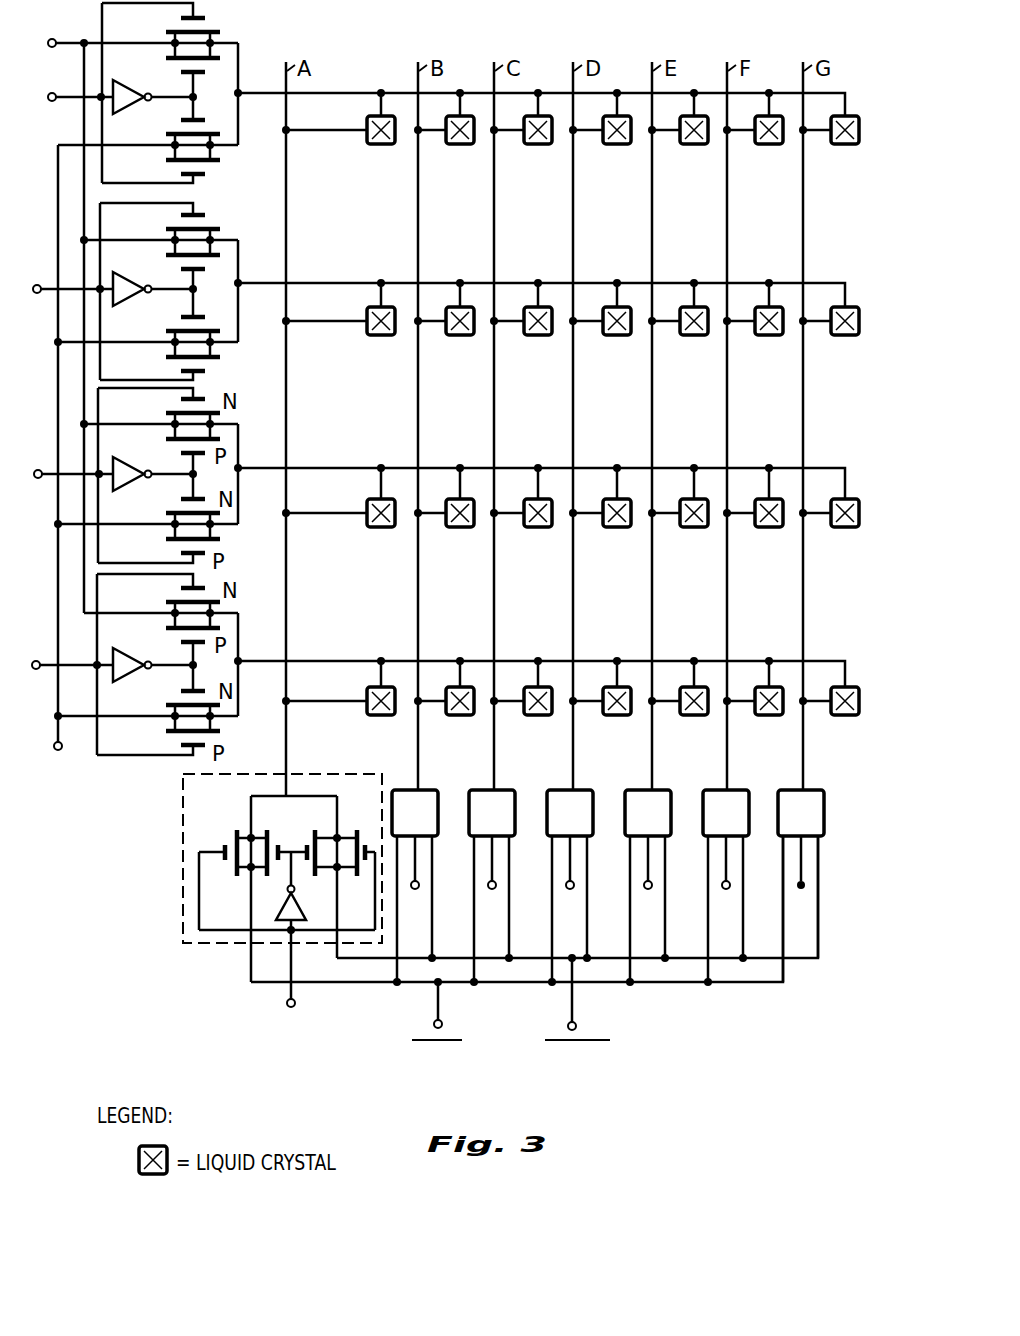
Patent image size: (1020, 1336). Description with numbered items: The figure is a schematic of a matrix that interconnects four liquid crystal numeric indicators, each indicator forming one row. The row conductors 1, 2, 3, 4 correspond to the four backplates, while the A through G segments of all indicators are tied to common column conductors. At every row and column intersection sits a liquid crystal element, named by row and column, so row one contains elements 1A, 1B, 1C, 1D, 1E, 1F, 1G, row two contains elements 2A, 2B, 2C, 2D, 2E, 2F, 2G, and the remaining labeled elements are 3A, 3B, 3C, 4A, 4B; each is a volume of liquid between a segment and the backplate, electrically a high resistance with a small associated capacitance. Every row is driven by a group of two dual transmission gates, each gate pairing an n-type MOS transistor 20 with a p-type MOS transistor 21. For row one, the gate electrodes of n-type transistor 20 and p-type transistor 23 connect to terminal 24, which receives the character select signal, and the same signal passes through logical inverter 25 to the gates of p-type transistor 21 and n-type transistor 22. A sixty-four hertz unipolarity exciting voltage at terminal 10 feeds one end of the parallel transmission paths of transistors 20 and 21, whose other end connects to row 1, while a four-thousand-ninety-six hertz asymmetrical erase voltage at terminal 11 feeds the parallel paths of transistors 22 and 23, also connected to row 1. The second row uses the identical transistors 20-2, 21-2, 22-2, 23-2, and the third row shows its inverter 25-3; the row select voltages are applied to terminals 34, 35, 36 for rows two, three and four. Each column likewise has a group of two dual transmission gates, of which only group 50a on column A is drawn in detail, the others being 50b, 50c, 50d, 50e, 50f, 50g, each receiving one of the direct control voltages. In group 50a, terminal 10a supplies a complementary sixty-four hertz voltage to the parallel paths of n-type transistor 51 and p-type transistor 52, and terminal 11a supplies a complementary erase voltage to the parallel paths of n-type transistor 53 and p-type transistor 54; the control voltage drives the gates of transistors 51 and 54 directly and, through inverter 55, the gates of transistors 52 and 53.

The terminal 10 is at (52, 37).
The terminal 11 is at (61, 742).
The terminal 24 is at (73, 103).
The terminal 34 is at (69, 294).
The terminal 35 is at (36, 477).
The terminal 36 is at (34, 668).
The logical inverter 25 is at (132, 83).
The n-type MOS transistor 20 is at (157, 29).
The p-type MOS transistor 21 is at (153, 76).
The n-type MOS transistor 22 is at (157, 139).
The p-type MOS transistor 23 is at (157, 179).
The n-type MOS transistor 20-2 is at (155, 233).
The p-type MOS transistor 21-2 is at (150, 265).
The n-type MOS transistor 22-2 is at (150, 334).
The p-type MOS transistor 23-2 is at (152, 375).
The logical inverter 25-3 is at (136, 461).
The row conductor 1 is at (266, 90).
The row conductor 2 is at (272, 282).
The row conductor 3 is at (272, 466).
The row conductor 4 is at (274, 661).
The liquid crystal element 1A is at (381, 144).
The liquid crystal element 1B is at (460, 144).
The liquid crystal element 1C is at (538, 144).
The liquid crystal element 1D is at (617, 144).
The liquid crystal element 1E is at (694, 144).
The liquid crystal element 1F is at (769, 144).
The liquid crystal element 1G is at (845, 144).
The liquid crystal element 2A is at (381, 335).
The liquid crystal element 2B is at (460, 335).
The liquid crystal element 2C is at (538, 335).
The liquid crystal element 2D is at (617, 335).
The liquid crystal element 2E is at (694, 335).
The liquid crystal element 2F is at (769, 335).
The liquid crystal element 2G is at (845, 335).
The liquid crystal element 3A is at (381, 527).
The liquid crystal element 3B is at (460, 527).
The liquid crystal element 3C is at (538, 527).
The liquid crystal element 4A is at (381, 715).
The liquid crystal element 4B is at (470, 710).
The dual transmission gate group 50a is at (261, 903).
The dual transmission gate group 50b is at (415, 886).
The dual transmission gate group 50c is at (492, 886).
The dual transmission gate group 50d is at (570, 886).
The dual transmission gate group 50e is at (648, 886).
The dual transmission gate group 50f is at (726, 886).
The dual transmission gate group 50g is at (801, 886).
The n-type transistor 51 is at (223, 901).
The p-type transistor 52 is at (277, 901).
The n-type transistor 53 is at (329, 901).
The p-type transistor 54 is at (372, 901).
The inverter 55 is at (280, 920).
The terminal 10a is at (441, 1020).
The terminal 11a is at (575, 1022).